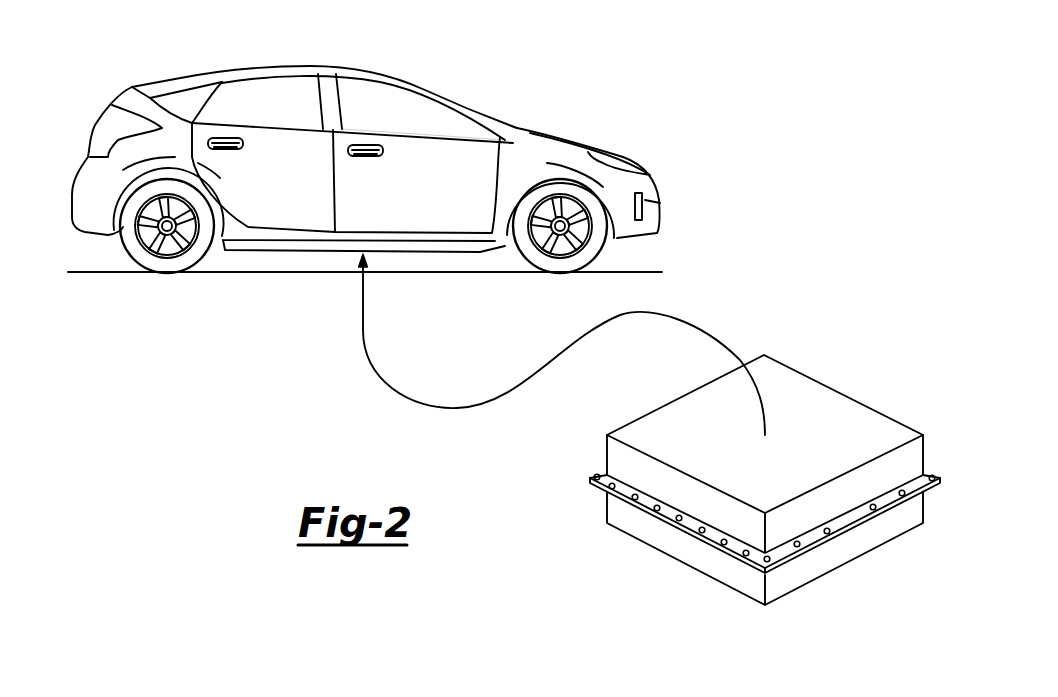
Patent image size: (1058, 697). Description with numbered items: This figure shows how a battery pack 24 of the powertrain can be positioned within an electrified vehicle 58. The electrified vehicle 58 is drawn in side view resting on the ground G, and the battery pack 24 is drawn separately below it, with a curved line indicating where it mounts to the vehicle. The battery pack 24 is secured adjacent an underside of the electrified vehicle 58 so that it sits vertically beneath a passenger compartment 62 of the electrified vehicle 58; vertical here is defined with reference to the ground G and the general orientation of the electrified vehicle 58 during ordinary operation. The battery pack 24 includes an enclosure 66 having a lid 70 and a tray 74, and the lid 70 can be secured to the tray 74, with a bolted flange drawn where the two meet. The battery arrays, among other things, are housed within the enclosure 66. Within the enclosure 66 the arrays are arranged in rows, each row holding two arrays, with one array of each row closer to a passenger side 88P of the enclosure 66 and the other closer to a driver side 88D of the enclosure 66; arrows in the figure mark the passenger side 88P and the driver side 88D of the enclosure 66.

The electrified vehicle 58 is at (487, 92).
The passenger compartment 62 is at (390, 112).
The ground G is at (115, 272).
The battery pack 24 is at (756, 437).
The lid 70 is at (822, 408).
The enclosure 66 is at (640, 525).
The tray 74 is at (853, 545).
The driver side 88D is at (912, 411).
The passenger side 88P is at (678, 583).